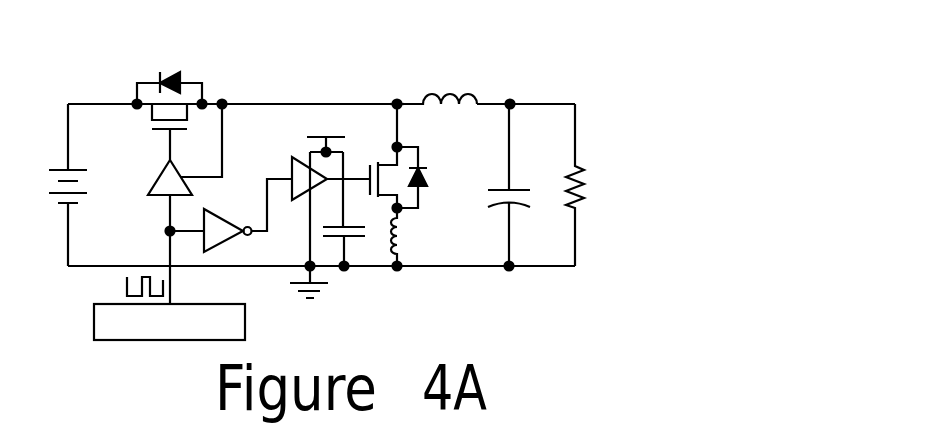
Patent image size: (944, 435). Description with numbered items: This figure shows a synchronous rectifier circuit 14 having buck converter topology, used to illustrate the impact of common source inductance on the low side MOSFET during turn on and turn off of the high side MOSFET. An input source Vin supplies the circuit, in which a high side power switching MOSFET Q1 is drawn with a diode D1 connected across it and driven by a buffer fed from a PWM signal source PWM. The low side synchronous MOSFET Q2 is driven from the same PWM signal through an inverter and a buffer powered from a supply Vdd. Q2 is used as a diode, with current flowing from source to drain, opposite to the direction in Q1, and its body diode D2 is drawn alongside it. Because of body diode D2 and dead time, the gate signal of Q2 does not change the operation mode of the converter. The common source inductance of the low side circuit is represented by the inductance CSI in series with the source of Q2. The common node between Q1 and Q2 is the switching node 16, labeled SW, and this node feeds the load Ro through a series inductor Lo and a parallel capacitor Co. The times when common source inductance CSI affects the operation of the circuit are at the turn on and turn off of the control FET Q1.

The synchronous rectifier circuit 14 is at (397, 104).
The switching node 16 is at (415, 32).
The input voltage source Vin is at (56, 185).
The diode D1 is at (169, 74).
The high side power switching MOSFET Q1 is at (176, 204).
The supply voltage Vdd is at (336, 190).
The low side synchronous MOSFET Q2 is at (374, 172).
The switching node SW is at (379, 89).
The body diode D2 is at (431, 177).
The current sense inductor CSI is at (418, 237).
The series inductor Lo is at (437, 86).
The parallel capacitor Co is at (516, 185).
The load Ro is at (592, 185).
The PWM signal source PWM is at (169, 308).